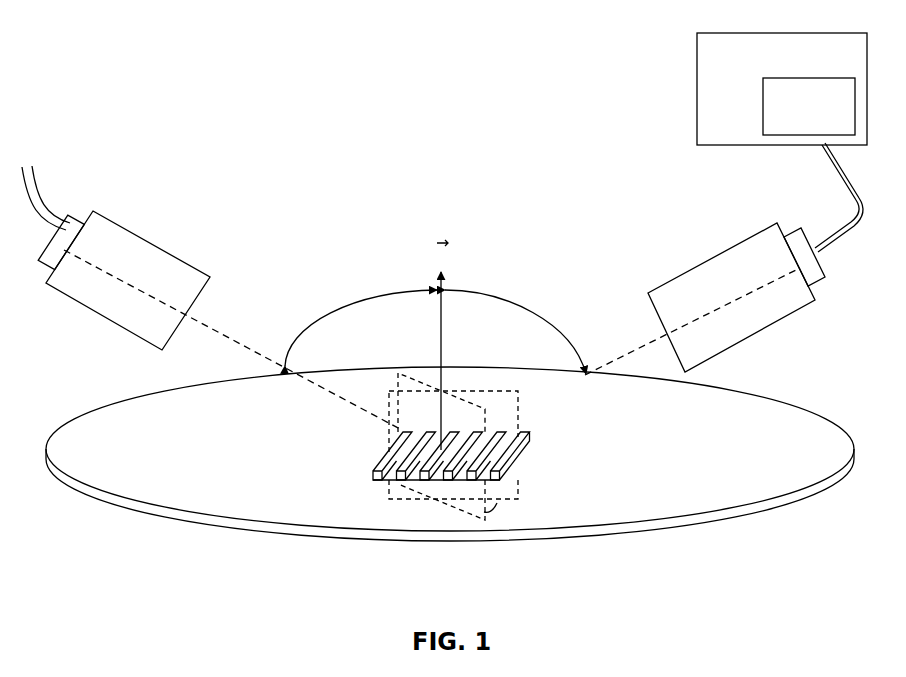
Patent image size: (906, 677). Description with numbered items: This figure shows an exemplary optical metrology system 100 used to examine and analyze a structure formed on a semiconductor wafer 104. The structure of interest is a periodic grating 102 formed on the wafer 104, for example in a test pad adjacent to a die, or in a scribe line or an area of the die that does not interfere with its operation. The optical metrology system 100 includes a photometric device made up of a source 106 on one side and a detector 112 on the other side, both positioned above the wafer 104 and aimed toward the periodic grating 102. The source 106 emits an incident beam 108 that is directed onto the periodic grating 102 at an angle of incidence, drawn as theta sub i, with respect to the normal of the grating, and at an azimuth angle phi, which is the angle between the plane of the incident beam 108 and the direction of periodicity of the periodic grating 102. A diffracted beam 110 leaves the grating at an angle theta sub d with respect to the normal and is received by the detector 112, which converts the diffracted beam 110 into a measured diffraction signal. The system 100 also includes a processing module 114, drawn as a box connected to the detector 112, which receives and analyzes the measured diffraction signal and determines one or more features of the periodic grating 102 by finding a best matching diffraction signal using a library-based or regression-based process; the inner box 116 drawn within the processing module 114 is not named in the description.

The optical metrology system 100 is at (334, 105).
The periodic grating 102 is at (376, 491).
The semiconductor wafer 104 is at (110, 402).
The source 106 is at (130, 232).
The incident beam 108 is at (217, 332).
The diffracted beam 110 is at (648, 345).
The detector 112 is at (700, 265).
The processing module 114 is at (743, 68).
The library / model 116 is at (823, 118).